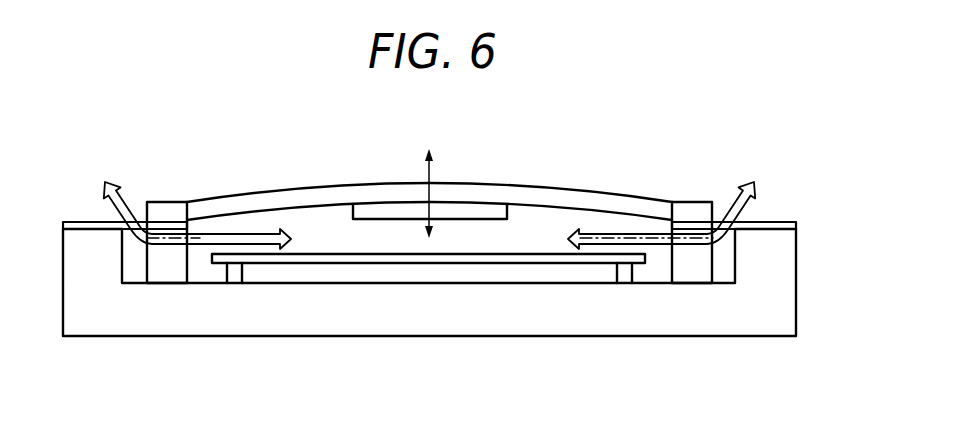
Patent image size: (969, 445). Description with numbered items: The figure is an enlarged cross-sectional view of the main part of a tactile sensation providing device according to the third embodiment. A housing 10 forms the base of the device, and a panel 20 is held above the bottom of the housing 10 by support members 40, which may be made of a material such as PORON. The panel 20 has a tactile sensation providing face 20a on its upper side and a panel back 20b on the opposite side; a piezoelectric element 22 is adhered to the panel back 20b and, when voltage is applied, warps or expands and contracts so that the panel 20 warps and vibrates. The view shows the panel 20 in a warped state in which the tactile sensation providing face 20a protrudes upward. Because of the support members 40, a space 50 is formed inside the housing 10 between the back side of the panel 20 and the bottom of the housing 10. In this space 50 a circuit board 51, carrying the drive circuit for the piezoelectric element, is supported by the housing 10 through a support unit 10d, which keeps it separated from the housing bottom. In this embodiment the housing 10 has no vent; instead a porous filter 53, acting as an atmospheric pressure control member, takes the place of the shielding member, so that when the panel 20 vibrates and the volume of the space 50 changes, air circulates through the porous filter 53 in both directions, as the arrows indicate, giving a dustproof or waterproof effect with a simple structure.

The housing 10 is at (762, 342).
The support unit 10d is at (622, 278).
The panel 20 is at (429, 178).
The tactile sensation providing face 20a is at (260, 192).
The panel back 20b is at (213, 218).
The piezoelectric element 22 is at (470, 210).
The support member 40 is at (167, 275).
The space 50 is at (313, 214).
The circuit board 51 is at (532, 257).
The porous filter 53 is at (70, 222).